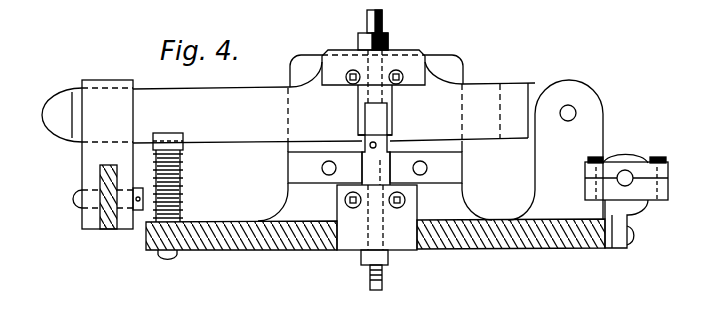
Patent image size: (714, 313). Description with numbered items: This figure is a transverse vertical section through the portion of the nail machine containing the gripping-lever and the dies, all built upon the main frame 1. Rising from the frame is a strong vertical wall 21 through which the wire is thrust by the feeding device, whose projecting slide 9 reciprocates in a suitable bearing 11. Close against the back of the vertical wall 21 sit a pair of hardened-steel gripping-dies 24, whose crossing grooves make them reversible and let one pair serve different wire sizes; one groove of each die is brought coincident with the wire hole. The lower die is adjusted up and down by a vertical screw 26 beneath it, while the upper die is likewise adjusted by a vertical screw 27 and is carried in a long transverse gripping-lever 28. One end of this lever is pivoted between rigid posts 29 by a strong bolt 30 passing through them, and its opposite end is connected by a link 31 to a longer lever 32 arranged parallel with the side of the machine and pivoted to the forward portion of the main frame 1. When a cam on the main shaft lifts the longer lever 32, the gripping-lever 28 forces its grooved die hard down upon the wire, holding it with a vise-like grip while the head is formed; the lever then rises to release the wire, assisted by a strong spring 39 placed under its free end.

The main frame 1 is at (375, 245).
The projecting slide 9 is at (623, 187).
The bearing 11 is at (626, 192).
The vertical wall 21 is at (390, 59).
The gripping-dies 24 is at (375, 135).
The vertical screw 26 is at (377, 237).
The vertical screw 27 is at (381, 56).
The gripping-lever 28 is at (334, 113).
The rigid posts 29 is at (555, 150).
The bolt 30 is at (578, 113).
The link 31 is at (92, 146).
The lever 32 is at (107, 207).
The spring 39 is at (170, 188).